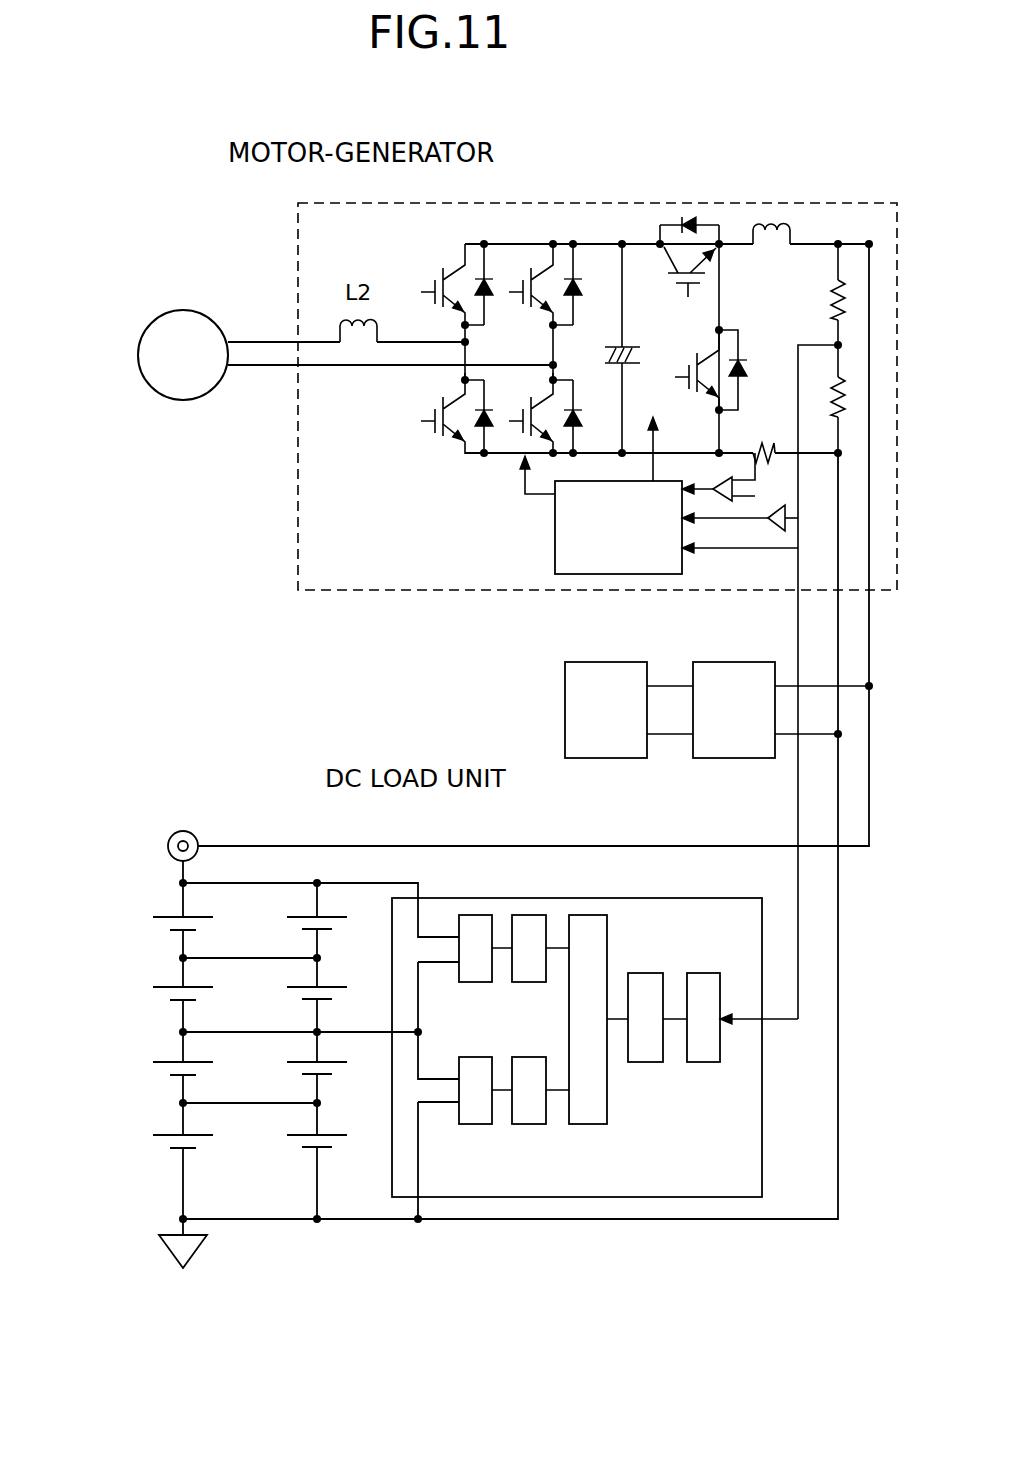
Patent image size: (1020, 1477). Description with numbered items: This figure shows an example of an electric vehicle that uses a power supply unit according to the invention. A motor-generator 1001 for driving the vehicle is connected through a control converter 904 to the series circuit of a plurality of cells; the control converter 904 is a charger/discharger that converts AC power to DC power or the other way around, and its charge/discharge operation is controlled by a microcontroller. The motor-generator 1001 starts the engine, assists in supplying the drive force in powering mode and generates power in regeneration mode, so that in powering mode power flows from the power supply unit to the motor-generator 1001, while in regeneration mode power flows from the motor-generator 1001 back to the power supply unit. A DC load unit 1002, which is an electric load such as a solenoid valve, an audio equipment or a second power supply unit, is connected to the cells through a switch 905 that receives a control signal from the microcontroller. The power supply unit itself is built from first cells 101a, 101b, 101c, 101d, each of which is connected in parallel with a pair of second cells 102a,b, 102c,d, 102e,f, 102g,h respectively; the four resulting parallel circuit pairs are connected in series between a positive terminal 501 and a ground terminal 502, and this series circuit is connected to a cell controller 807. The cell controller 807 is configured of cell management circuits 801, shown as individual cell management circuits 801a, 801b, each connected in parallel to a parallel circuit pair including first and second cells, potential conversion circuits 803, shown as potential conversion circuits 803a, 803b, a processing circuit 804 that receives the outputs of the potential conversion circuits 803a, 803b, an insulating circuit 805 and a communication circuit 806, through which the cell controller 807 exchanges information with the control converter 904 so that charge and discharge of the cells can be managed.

The motor-generator 1001 is at (183, 310).
The control converter 904 is at (298, 528).
The DC load unit 1002 is at (565, 738).
The switch 905 is at (734, 710).
The positive terminal 501 is at (168, 846).
The negative (ground) terminal 502 is at (163, 1249).
The first cell 101a is at (170, 929).
The first cell 101b is at (170, 999).
The first cell 101c is at (170, 1073).
The first cell 101d is at (170, 1146).
The second cells 102a,b is at (273, 937).
The second cells 102c,d is at (298, 992).
The second cells 102e,f is at (298, 1072).
The second cells 102g,h is at (298, 1158).
The cell controller 807 is at (762, 1175).
The cell management circuit 801 is at (481, 1105).
The cell management circuit 801a is at (472, 982).
The cell management circuit 801b is at (472, 1124).
The potential conversion circuit 803 is at (578, 1105).
The potential conversion circuit 803a is at (528, 982).
The potential conversion circuit 803b is at (528, 1124).
The processing circuit 804 is at (588, 1124).
The insulating circuit 805 is at (645, 1062).
The communication circuit 806 is at (703, 1062).